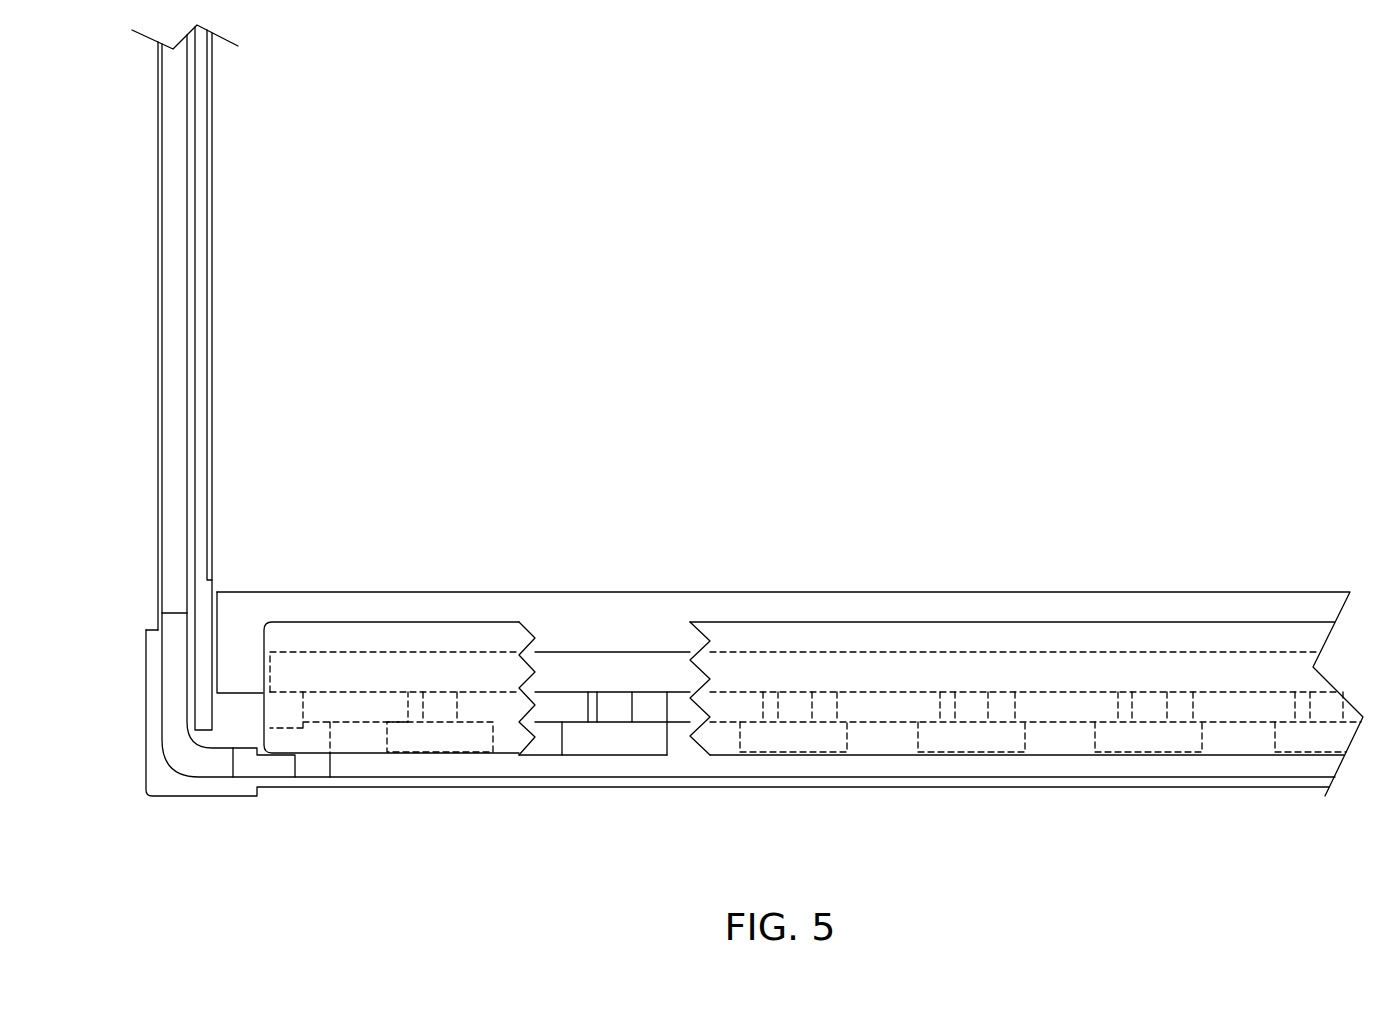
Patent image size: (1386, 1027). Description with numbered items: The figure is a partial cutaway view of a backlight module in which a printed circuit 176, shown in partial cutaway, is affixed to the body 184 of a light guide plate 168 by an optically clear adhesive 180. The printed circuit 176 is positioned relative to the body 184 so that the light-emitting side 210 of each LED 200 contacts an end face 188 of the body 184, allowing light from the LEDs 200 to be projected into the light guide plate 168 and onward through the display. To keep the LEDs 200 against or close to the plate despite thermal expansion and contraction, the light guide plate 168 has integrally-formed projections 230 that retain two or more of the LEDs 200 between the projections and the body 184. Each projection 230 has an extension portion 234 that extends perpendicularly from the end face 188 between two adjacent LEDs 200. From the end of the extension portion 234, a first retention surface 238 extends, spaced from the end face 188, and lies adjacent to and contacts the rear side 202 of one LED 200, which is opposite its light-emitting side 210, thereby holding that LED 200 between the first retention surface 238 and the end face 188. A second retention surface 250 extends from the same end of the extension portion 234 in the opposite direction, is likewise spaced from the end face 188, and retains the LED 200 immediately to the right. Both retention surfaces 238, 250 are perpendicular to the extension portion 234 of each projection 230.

The light guide plate 168 is at (204, 606).
The printed circuit 176 is at (378, 637).
The optically clear adhesive 180 is at (288, 667).
The body 184 is at (232, 653).
The end face 188 is at (255, 692).
The LED 200 is at (342, 712).
The rear side 202 is at (372, 723).
The light-emitting side 210 is at (336, 688).
The projection 230 is at (435, 740).
The extension portion 234 is at (442, 705).
The first retention surface 238 is at (413, 720).
The second retention surface 250 is at (472, 722).